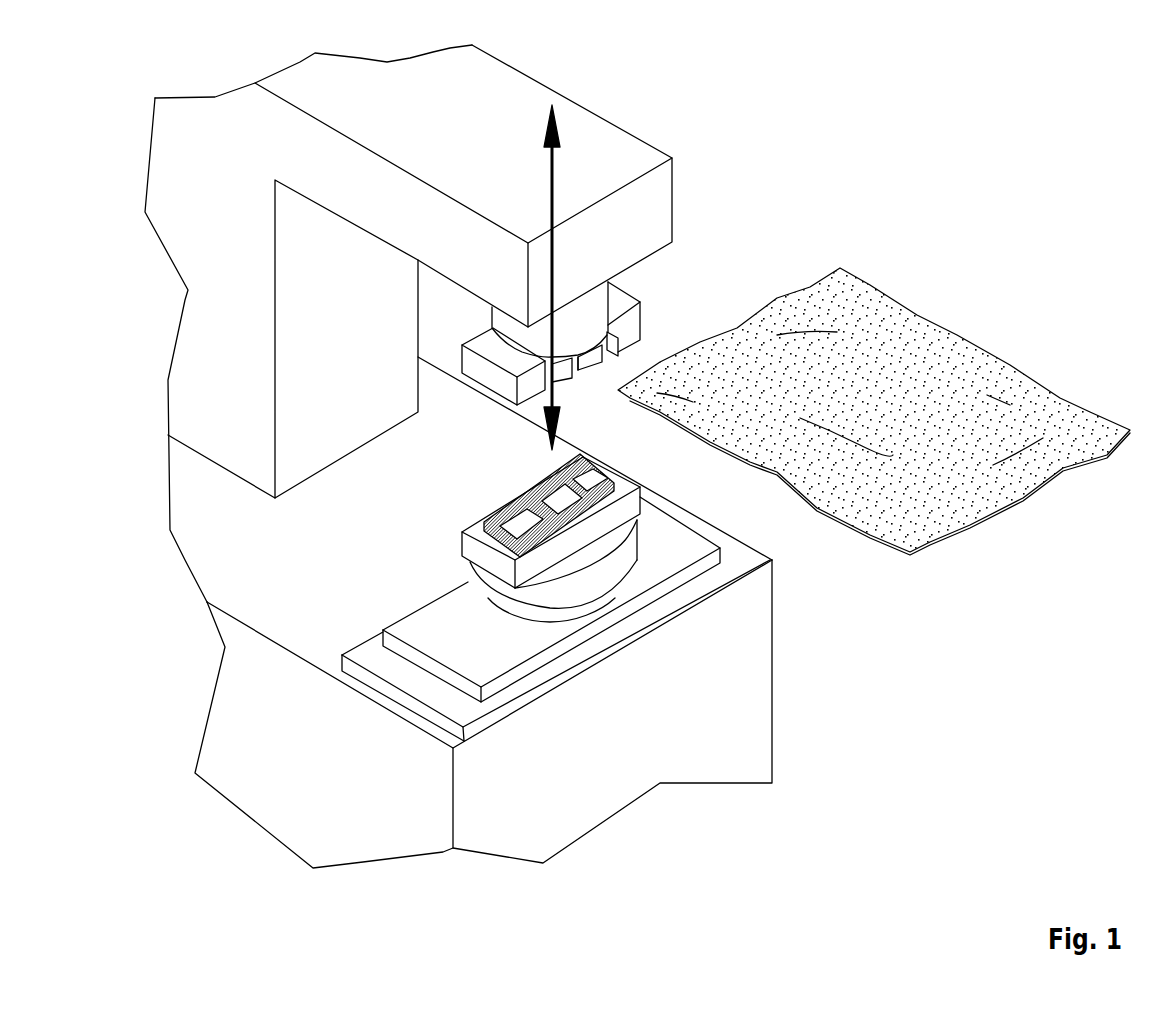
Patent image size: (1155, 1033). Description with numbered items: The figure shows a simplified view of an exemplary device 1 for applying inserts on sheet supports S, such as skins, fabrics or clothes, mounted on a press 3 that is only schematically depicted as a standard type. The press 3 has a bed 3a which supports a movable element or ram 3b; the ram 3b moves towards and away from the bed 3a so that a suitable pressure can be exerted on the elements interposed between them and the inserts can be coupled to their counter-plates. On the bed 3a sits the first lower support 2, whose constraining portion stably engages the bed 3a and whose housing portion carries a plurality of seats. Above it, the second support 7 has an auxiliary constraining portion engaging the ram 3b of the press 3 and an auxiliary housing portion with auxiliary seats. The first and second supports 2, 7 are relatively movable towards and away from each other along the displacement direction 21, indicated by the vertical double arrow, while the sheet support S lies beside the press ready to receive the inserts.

The device 1 is at (217, 531).
The press 3 is at (210, 365).
The bed 3a is at (452, 648).
The movable element 3b is at (653, 213).
The displacement direction 21 is at (553, 173).
The second support 7 is at (645, 308).
The first lower support 2 is at (640, 500).
The sheet support S is at (923, 375).